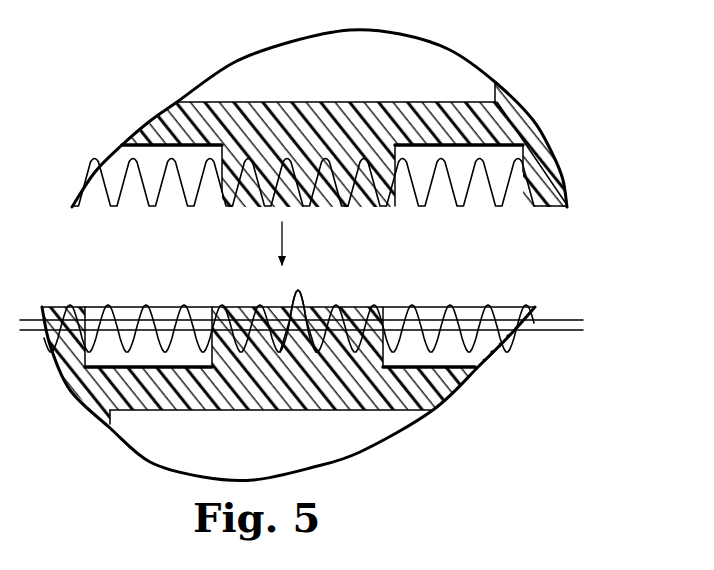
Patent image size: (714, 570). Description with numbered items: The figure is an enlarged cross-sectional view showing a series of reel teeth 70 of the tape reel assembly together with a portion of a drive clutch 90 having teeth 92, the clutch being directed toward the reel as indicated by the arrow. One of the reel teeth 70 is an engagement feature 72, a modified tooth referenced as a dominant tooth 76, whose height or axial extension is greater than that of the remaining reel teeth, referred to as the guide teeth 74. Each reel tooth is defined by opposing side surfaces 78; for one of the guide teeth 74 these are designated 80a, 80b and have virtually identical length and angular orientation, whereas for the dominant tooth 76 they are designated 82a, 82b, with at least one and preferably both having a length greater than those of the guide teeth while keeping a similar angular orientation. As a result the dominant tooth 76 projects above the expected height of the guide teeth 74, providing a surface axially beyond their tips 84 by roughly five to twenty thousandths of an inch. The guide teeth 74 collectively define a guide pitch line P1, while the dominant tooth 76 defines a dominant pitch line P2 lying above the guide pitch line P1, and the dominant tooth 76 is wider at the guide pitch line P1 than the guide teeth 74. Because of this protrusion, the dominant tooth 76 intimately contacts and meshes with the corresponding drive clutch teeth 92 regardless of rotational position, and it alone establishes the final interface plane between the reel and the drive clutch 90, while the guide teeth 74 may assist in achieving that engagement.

The reel teeth 70 is at (283, 370).
The engagement feature 72 is at (278, 290).
The guide teeth 74 is at (133, 358).
The dominant tooth 76 is at (304, 286).
The opposing side surfaces 78 is at (439, 310).
The side surface of guide tooth 80a is at (173, 318).
The side surface of guide tooth 80b is at (212, 367).
The side surface of dominant tooth 82a is at (277, 350).
The side surface of dominant tooth 82b is at (327, 345).
The tips of guide teeth 84 is at (398, 308).
The drive clutch 90 is at (530, 99).
The drive clutch teeth 92 is at (270, 172).
The guide pitch line P1 is at (553, 333).
The dominant pitch line P2 is at (562, 318).